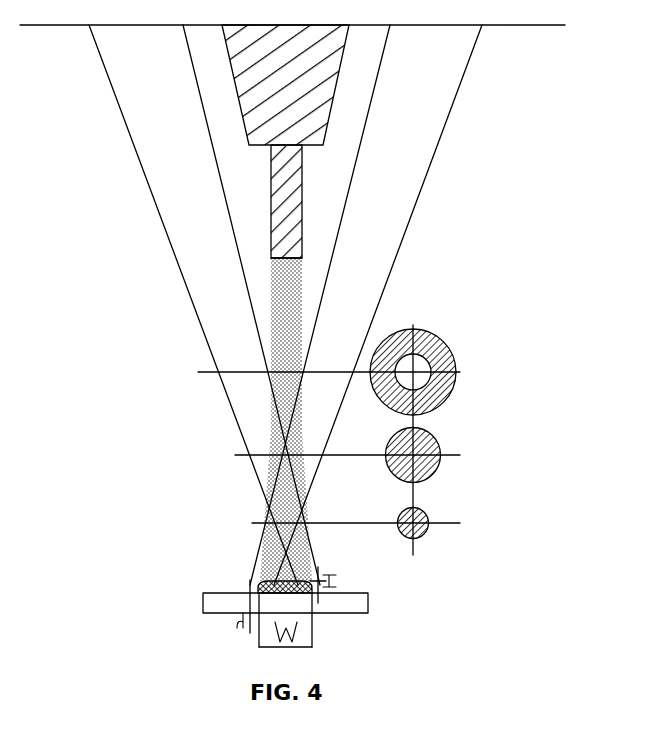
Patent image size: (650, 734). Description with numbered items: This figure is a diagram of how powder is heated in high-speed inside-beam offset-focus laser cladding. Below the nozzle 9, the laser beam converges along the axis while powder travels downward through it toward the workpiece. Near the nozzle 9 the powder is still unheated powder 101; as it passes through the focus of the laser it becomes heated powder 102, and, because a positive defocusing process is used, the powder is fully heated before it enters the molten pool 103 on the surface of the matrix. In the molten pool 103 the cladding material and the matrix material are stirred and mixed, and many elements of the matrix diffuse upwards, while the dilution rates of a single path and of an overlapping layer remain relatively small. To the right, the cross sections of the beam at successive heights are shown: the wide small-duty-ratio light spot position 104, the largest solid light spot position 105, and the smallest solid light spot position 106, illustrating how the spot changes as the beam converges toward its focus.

The nozzle 9 is at (285, 246).
The unheated powder 101 is at (288, 352).
The heated powder 102 is at (285, 522).
The molten pool 103 is at (288, 591).
The wide small-duty-ratio light spot position 104 is at (562, 358).
The largest solid light spot position 105 is at (562, 440).
The smallest solid light spot position 106 is at (562, 513).